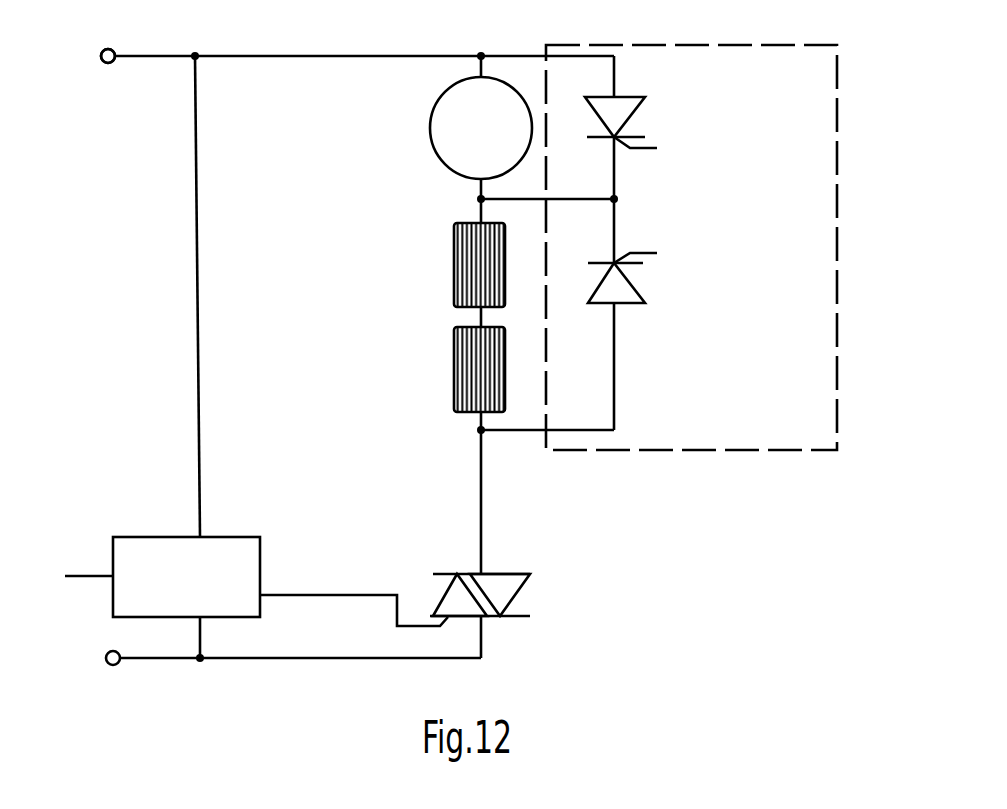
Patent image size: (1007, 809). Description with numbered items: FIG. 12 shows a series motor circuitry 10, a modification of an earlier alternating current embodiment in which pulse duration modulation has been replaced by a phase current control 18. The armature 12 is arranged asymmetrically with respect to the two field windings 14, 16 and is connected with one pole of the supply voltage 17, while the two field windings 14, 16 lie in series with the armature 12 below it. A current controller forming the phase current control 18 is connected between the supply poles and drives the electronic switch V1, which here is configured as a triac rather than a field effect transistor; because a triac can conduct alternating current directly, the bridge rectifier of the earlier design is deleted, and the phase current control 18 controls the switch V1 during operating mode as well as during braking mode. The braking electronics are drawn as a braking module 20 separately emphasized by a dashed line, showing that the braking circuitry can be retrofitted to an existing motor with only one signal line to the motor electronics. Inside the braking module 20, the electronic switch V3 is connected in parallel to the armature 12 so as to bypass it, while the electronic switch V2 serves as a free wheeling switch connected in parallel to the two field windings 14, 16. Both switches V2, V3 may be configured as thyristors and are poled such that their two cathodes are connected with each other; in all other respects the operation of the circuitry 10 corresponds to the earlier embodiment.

The circuitry 10 is at (100, 190).
The armature 12 is at (452, 137).
The field winding 14 is at (470, 264).
The field winding 16 is at (473, 363).
The supply voltage 17 is at (108, 65).
The phase current control 18 is at (155, 552).
The braking module 20 is at (792, 187).
The electronic switch V1 is at (507, 588).
The electronic switch V2 is at (628, 295).
The electronic switch V3 is at (623, 108).